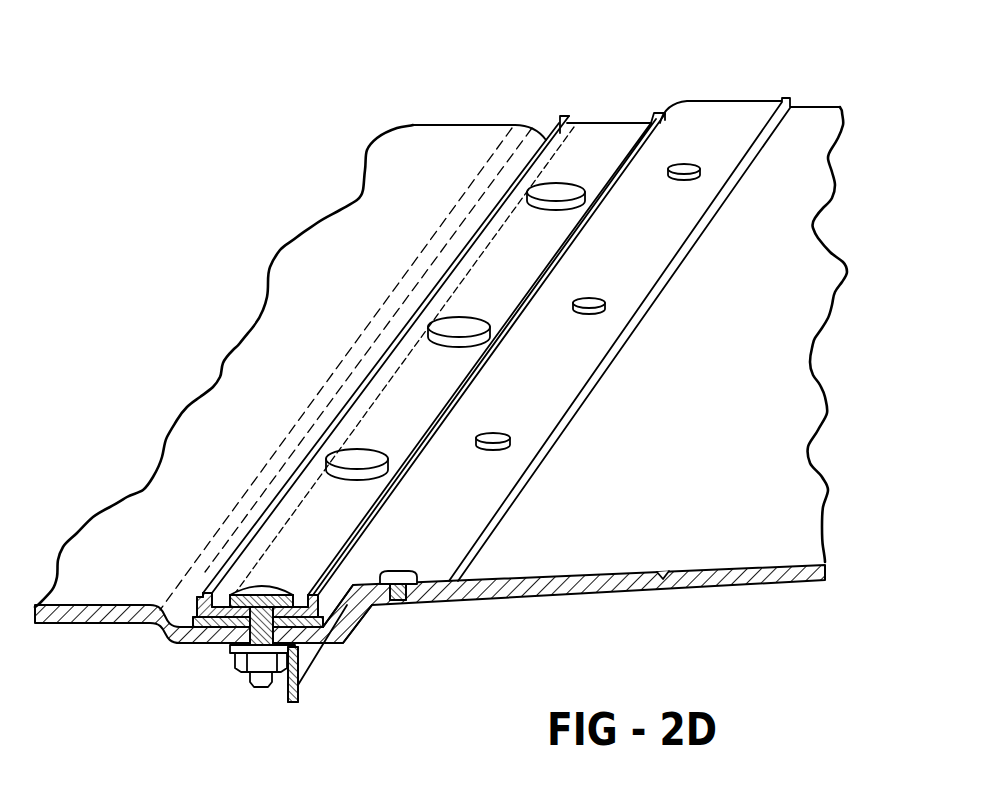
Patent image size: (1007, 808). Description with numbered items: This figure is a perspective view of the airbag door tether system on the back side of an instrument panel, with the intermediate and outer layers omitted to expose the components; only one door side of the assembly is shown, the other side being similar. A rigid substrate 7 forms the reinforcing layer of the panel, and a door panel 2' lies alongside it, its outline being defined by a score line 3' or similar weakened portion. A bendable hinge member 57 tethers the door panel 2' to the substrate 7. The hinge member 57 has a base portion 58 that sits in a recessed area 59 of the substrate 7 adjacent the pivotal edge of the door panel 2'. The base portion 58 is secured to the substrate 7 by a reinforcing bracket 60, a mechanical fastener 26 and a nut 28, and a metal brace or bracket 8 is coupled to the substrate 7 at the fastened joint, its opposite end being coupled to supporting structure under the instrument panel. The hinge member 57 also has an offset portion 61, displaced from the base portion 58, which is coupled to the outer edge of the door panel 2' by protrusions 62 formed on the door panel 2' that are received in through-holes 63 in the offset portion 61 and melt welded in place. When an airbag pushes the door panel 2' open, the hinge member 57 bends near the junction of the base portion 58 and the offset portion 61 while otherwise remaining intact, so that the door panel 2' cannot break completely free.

The bendable hinge member 57 is at (636, 84).
The reinforcing bracket 60 is at (597, 137).
The offset portion 61 is at (745, 108).
The mechanical fastener 26 is at (527, 197).
The protrusion 62 is at (700, 172).
The substrate 7 is at (84, 537).
The recessed area 59 is at (180, 601).
The base portion 58 is at (197, 645).
The nut 28 is at (237, 668).
The metal brace or bracket 8 is at (300, 681).
The through-hole 63 is at (388, 607).
The door panel 2' is at (430, 626).
The score line 3' is at (665, 629).